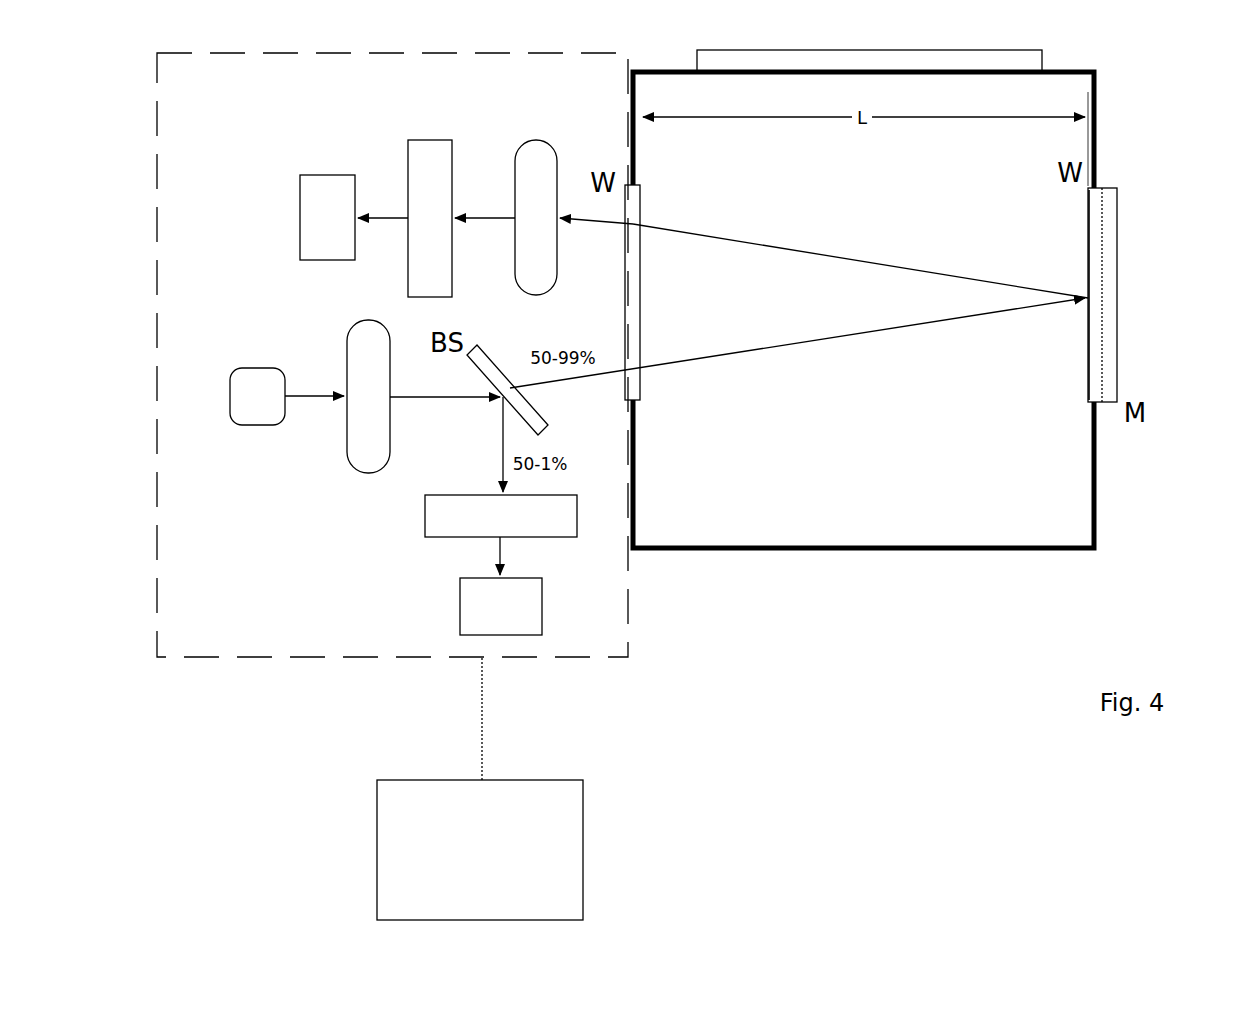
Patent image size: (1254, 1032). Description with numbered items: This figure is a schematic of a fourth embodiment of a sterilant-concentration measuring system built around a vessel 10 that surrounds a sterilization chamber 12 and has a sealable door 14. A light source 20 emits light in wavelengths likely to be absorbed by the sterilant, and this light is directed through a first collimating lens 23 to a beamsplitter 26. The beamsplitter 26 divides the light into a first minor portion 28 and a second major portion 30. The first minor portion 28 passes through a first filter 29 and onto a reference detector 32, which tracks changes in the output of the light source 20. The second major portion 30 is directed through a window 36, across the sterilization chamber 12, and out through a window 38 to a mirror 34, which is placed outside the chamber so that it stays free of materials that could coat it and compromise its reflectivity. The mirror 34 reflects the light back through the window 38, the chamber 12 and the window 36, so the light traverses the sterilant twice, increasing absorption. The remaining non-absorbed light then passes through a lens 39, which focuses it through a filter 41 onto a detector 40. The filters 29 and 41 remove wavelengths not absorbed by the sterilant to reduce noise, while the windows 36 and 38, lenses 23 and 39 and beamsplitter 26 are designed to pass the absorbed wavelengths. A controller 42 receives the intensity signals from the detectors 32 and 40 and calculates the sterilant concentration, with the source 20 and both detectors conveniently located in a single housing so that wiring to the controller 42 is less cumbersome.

The vessel 10 is at (972, 548).
The sterilization chamber 12 is at (875, 448).
The sealable door 14 is at (1042, 62).
The light source 20 is at (257, 425).
The first collimating lens 23 is at (347, 352).
The beamsplitter 26 is at (497, 366).
The first minor portion 28 is at (503, 445).
The first filter 29 is at (425, 513).
The second major portion 30 is at (590, 372).
The reference detector 32 is at (460, 605).
The mirror 34 is at (1117, 222).
The window 36 is at (640, 212).
The window 38 is at (1088, 250).
The lens 39 is at (538, 140).
The detector 40 is at (326, 175).
The filter 41 is at (428, 140).
The controller 42 is at (377, 848).